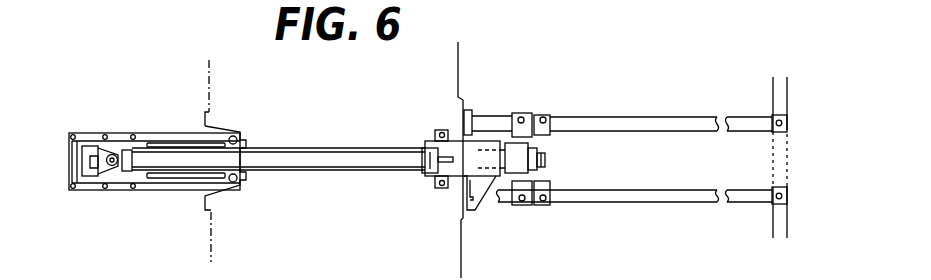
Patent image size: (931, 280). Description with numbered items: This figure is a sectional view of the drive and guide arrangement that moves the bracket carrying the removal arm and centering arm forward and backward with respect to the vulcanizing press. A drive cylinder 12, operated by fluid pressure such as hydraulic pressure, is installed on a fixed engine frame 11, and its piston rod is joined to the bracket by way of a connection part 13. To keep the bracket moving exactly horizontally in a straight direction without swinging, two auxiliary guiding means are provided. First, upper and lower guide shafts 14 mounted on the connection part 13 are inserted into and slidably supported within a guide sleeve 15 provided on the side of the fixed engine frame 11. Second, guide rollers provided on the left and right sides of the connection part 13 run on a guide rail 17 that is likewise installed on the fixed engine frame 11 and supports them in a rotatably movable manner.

The fixed engine frame 11 is at (160, 133).
The drive cylinder 12 is at (308, 148).
The connection part 13 is at (515, 145).
The guide shafts 14 is at (305, 171).
The guide sleeve 15 is at (448, 152).
The guide rail 17 is at (624, 117).